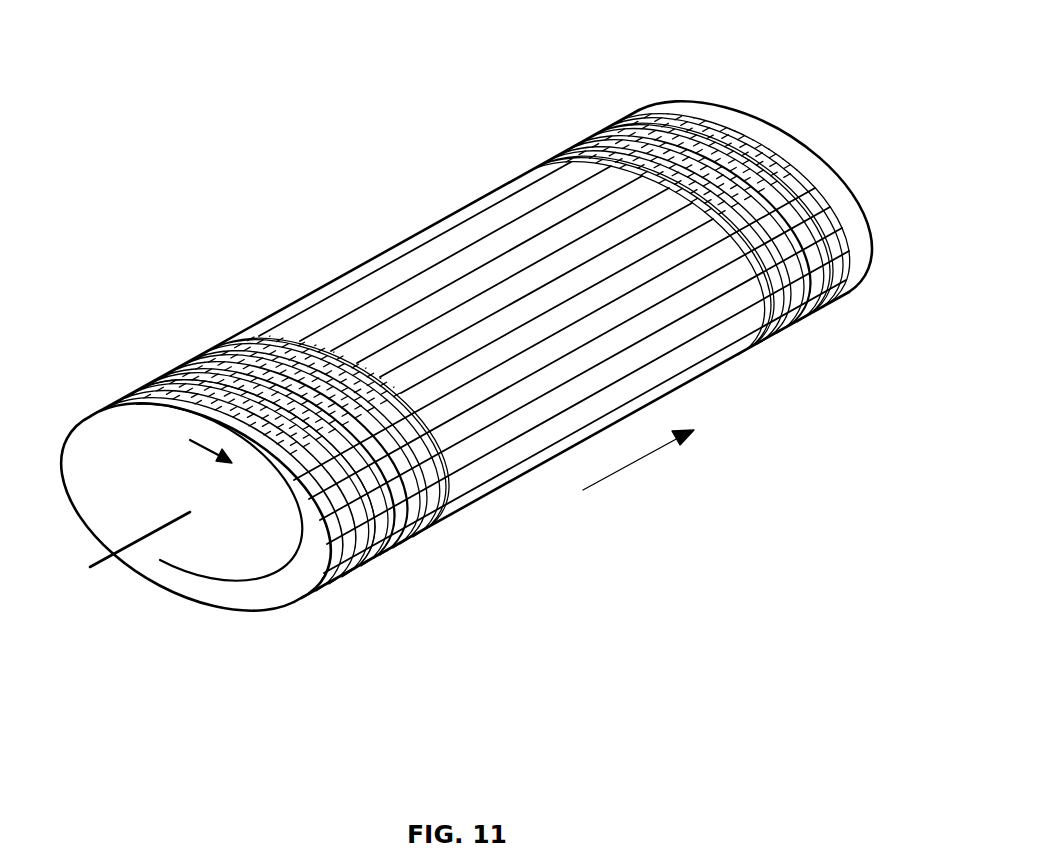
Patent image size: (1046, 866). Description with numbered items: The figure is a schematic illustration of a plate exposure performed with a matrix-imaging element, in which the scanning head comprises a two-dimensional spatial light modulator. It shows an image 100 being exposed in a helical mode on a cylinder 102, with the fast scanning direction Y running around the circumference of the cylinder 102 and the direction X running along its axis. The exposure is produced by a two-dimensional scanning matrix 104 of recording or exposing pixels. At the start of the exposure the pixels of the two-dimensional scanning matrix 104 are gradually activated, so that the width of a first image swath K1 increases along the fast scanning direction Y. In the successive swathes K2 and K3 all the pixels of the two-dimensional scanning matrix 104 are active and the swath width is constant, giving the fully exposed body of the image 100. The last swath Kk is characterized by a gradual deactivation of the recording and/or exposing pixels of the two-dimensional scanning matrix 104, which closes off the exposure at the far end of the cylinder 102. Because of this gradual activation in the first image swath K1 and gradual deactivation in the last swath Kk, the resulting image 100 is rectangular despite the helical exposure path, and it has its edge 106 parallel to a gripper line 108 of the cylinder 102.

The image 100 is at (298, 333).
The cylinder 102 is at (737, 115).
The two-dimensional scanning matrix 104 is at (583, 153).
The edge 106 is at (433, 235).
The gripper line 108 is at (502, 190).
The first image swath K1 is at (355, 570).
The successive swath K2 is at (400, 542).
The successive swath K3 is at (438, 520).
The last swath Kk is at (843, 300).
The slow scanning direction X is at (638, 460).
The fast scanning direction Y is at (175, 503).